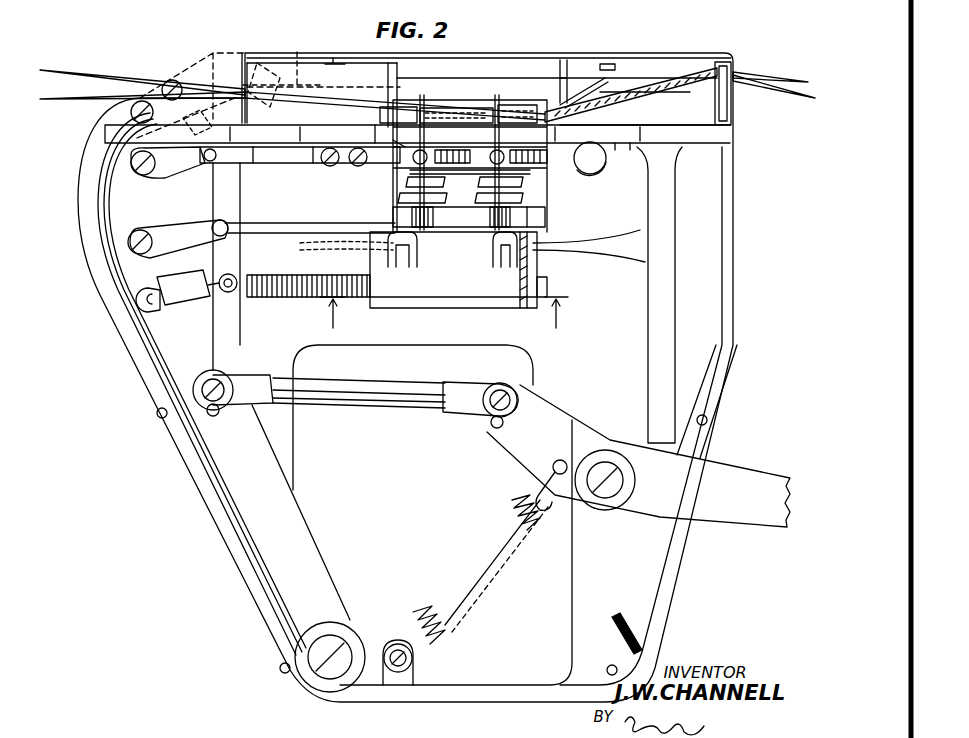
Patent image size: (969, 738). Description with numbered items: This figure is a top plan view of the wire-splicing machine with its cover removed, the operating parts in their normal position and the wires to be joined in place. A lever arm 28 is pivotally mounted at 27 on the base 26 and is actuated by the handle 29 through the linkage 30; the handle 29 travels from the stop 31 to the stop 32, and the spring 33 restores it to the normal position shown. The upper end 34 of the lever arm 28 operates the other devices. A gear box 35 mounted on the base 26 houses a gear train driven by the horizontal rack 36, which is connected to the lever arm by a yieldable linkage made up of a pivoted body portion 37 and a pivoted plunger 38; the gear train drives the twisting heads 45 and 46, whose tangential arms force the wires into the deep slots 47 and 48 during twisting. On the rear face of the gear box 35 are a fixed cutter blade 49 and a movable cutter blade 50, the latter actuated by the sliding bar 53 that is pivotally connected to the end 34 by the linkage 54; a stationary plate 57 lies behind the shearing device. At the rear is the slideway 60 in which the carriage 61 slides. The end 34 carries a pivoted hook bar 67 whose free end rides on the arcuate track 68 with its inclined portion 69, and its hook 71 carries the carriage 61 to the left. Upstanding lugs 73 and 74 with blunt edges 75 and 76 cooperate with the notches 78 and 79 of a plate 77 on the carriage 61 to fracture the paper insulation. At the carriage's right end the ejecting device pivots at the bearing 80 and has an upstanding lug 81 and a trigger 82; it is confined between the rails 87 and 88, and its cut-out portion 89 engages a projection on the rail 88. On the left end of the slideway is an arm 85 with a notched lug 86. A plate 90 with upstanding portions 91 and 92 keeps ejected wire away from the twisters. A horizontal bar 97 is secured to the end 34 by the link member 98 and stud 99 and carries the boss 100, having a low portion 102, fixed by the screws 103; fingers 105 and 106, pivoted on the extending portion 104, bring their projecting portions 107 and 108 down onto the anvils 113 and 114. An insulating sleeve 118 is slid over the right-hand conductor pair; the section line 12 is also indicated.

The section line 12 is at (444, 322).
The base 26 is at (293, 475).
The pivot 27 is at (337, 680).
The lever arm 28 is at (257, 568).
The handle 29 is at (762, 520).
The linkage 30 is at (390, 398).
The stop 31 is at (695, 452).
The stop 32 is at (636, 636).
The spring 33 is at (452, 628).
The upper end of the lever arm 34 is at (110, 200).
The gear box 35 is at (462, 300).
The horizontal rack 36 is at (295, 300).
The pivoted body portion 37 is at (186, 305).
The pivoted plunger 38 is at (226, 293).
The twisting head 45 is at (398, 197).
The twisting head 46 is at (523, 200).
The slot 47 is at (405, 181).
The slot 48 is at (521, 183).
The fixed cutter blade 49 is at (400, 258).
The movable cutter blade 50 is at (495, 235).
The sliding bar 53 is at (295, 238).
The linkage 54 is at (210, 225).
The stationary plate 57 is at (520, 213).
The slideway 60 is at (110, 130).
The carriage 61 is at (622, 132).
The hook bar 67 is at (215, 55).
The arcuate track 68 is at (300, 60).
The inclined portion 69 is at (265, 133).
The hook 71 is at (280, 62).
The upstanding lug 73 is at (430, 127).
The upstanding lug 74 is at (505, 130).
The blunt edge 75 is at (395, 150).
The blunt edge 76 is at (494, 128).
The plate 77 is at (380, 105).
The notch 78 is at (445, 110).
The notch 79 is at (497, 105).
The bearing 80 is at (637, 83).
The upstanding lug 81 is at (722, 62).
The trigger 82 is at (740, 70).
The arm 85 is at (157, 105).
The notched lug 86 is at (245, 60).
The rail 87 is at (580, 75).
The rail 88 is at (675, 150).
The cut-out portion 89 is at (622, 108).
The plate 90 is at (460, 57).
The upstanding portion 91 is at (608, 62).
The upstanding portion 92 is at (335, 58).
The horizontal bar 97 is at (275, 163).
The link member 98 is at (190, 165).
The stud 99 is at (131, 163).
The boss 100 is at (375, 140).
The low portion 102 is at (330, 166).
The screws 103 is at (355, 166).
The extending portion 104 is at (540, 133).
The finger 105 is at (440, 158).
The finger 106 is at (540, 153).
The projecting portion 107 is at (470, 178).
The projecting portion 108 is at (552, 165).
The anvil 113 is at (409, 152).
The anvil 114 is at (460, 215).
The insulating sleeve 118 is at (578, 80).